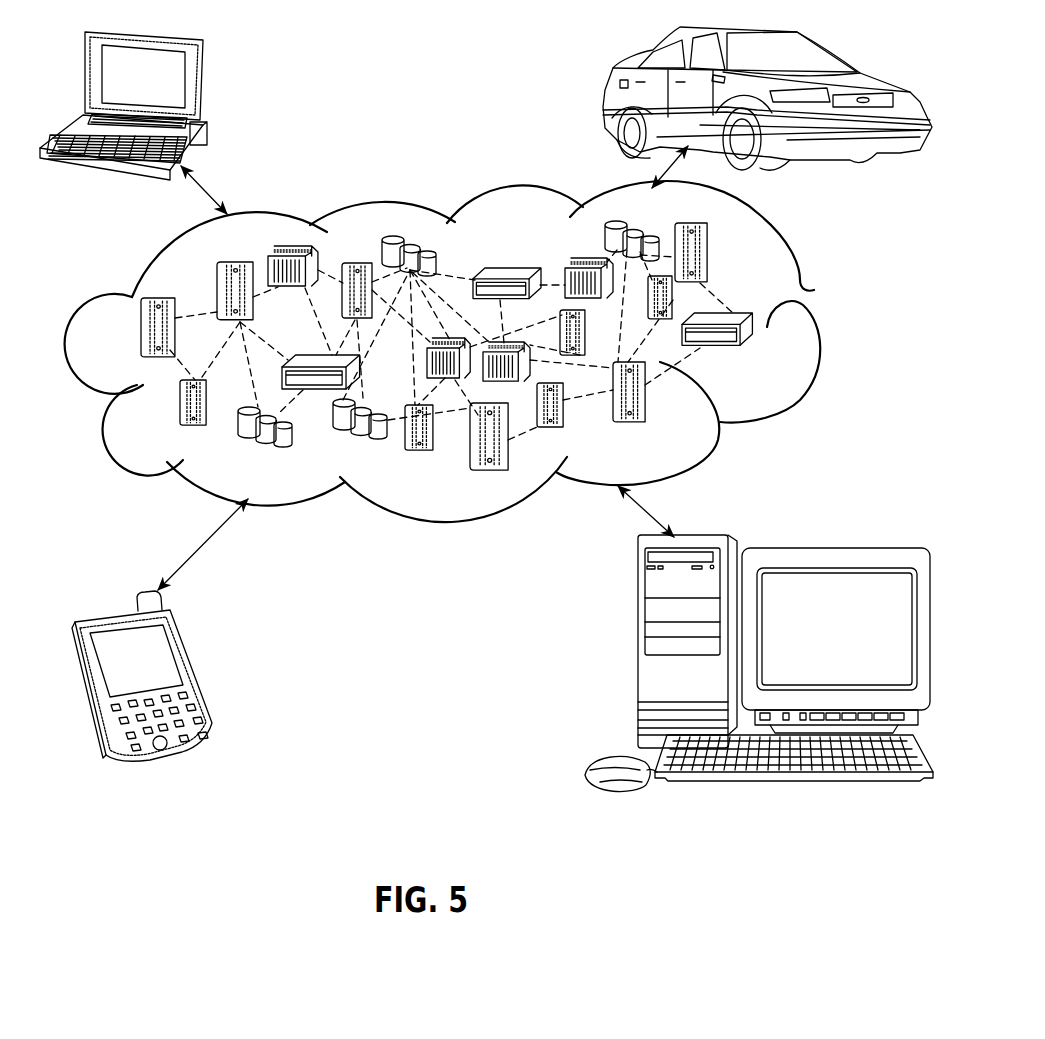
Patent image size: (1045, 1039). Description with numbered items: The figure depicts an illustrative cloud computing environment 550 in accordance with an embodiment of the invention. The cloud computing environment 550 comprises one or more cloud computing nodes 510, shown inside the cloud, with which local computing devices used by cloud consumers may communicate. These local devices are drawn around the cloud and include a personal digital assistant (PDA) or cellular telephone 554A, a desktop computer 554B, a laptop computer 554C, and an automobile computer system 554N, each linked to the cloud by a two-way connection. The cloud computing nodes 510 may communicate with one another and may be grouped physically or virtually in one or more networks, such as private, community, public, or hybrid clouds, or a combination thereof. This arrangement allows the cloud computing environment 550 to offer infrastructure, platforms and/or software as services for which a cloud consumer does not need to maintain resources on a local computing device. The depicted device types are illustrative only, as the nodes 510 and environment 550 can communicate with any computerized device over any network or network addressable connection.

The cloud computing nodes 510 is at (776, 354).
The cloud computing environment 550 is at (812, 291).
The personal digital assistant (PDA) or cellular telephone 554A is at (192, 672).
The desktop computer 554B is at (633, 652).
The laptop computer 554C is at (203, 80).
The automobile computer system 554N is at (606, 88).